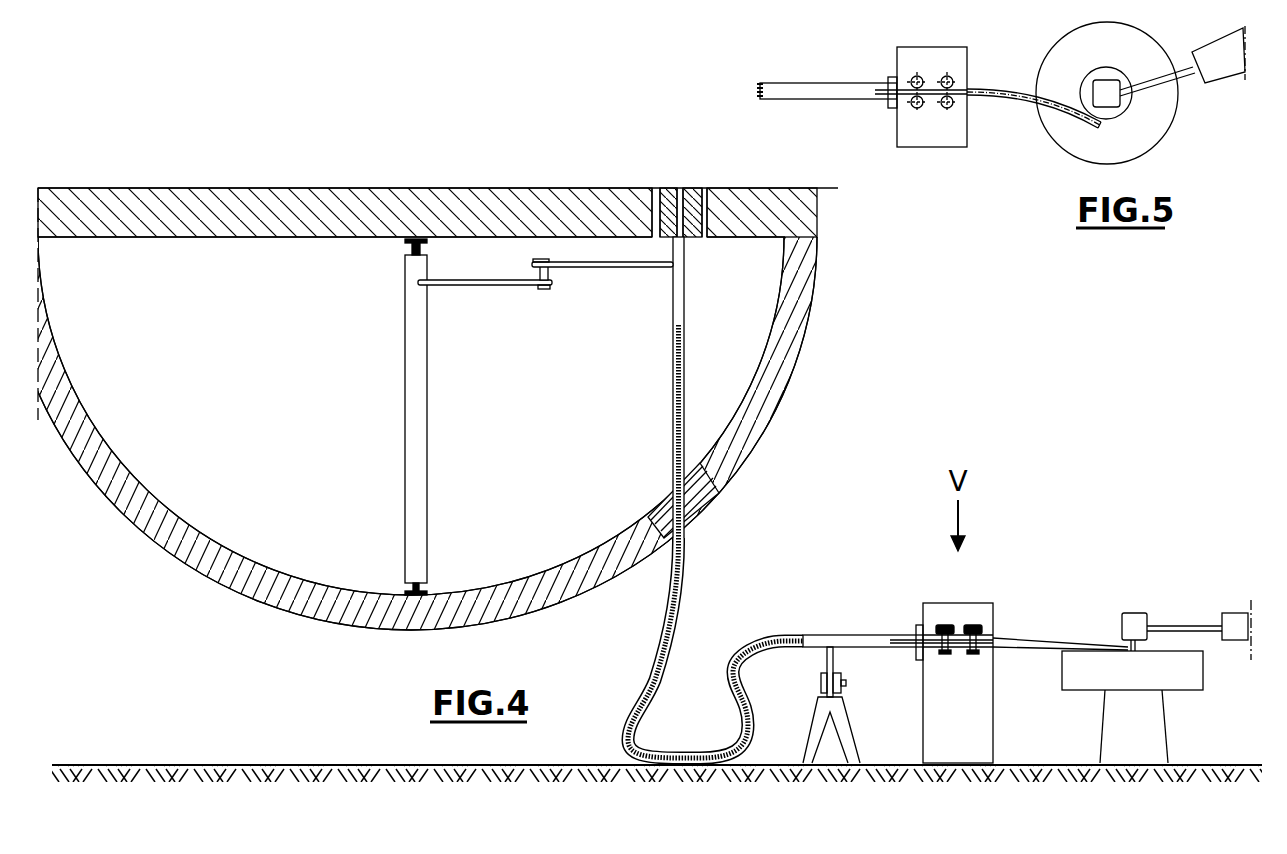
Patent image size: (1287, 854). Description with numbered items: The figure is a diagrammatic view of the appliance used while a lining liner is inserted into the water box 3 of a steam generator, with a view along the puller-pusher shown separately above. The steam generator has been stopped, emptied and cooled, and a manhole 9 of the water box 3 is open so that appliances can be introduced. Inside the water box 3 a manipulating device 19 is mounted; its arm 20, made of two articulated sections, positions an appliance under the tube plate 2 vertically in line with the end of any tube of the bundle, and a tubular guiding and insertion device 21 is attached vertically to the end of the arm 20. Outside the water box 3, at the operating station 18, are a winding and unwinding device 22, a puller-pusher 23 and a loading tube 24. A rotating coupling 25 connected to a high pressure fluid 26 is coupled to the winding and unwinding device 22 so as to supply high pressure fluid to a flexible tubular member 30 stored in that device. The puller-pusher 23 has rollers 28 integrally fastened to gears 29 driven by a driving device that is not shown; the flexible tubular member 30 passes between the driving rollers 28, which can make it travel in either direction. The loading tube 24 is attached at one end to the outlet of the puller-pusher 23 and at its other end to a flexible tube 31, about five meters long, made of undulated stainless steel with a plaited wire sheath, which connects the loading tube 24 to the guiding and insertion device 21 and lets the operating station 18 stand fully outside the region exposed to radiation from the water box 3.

In FIG. 4, the tube plate 2 is at (170, 202).
In FIG. 4, the water box 3 is at (806, 318).
In FIG. 4, the manhole 9 is at (708, 489).
In FIG. 4, the operating station 18 is at (896, 622).
In FIG. 4, the manipulating device 19 is at (427, 488).
In FIG. 4, the arm 20 is at (497, 289).
In FIG. 4, the guiding and insertion device 21 is at (673, 311).
In FIG. 4, the winding and unwinding device 22 is at (1082, 677).
In FIG. 5, the winding and unwinding device 22 is at (1058, 53).
In FIG. 4, the puller-pusher 23 is at (995, 617).
In FIG. 5, the puller-pusher 23 is at (988, 97).
In FIG. 4, the loading tube 24 is at (820, 634).
In FIG. 5, the loading tube 24 is at (809, 88).
In FIG. 4, the rotating coupling 25 is at (1135, 618).
In FIG. 5, the rotating coupling 25 is at (1117, 108).
In FIG. 4, the high pressure fluid 26 is at (1236, 618).
In FIG. 5, the high pressure fluid 26 is at (1225, 70).
In FIG. 4, the rollers 28 is at (973, 654).
In FIG. 5, the rollers 28 is at (947, 109).
In FIG. 4, the gears 29 is at (946, 625).
In FIG. 5, the gears 29 is at (947, 76).
In FIG. 4, the flexible tubular member 30 is at (1030, 650).
In FIG. 4, the flexible tube 31 is at (686, 597).